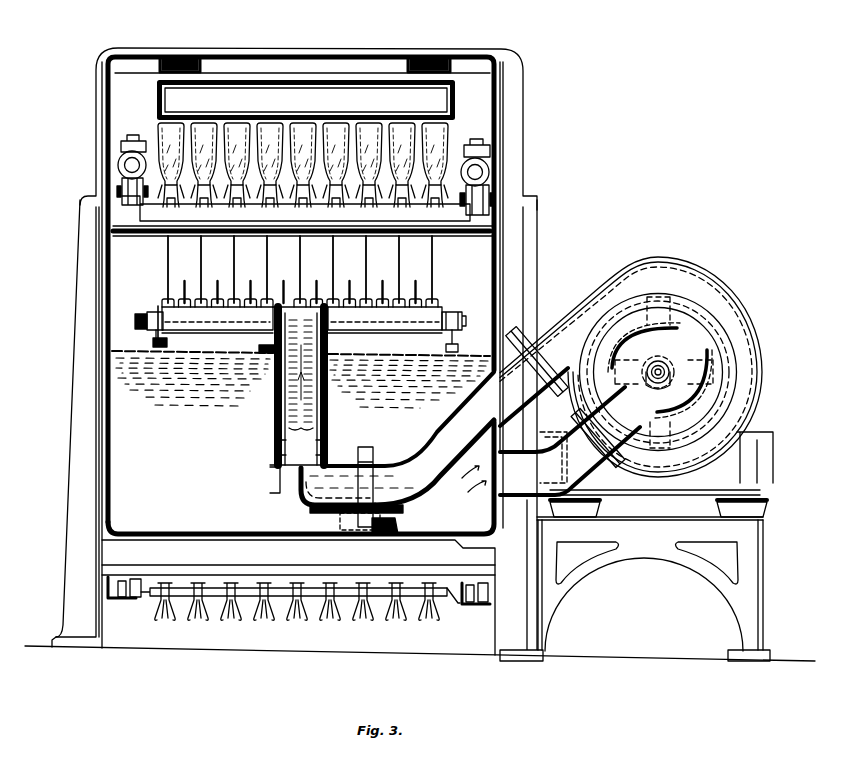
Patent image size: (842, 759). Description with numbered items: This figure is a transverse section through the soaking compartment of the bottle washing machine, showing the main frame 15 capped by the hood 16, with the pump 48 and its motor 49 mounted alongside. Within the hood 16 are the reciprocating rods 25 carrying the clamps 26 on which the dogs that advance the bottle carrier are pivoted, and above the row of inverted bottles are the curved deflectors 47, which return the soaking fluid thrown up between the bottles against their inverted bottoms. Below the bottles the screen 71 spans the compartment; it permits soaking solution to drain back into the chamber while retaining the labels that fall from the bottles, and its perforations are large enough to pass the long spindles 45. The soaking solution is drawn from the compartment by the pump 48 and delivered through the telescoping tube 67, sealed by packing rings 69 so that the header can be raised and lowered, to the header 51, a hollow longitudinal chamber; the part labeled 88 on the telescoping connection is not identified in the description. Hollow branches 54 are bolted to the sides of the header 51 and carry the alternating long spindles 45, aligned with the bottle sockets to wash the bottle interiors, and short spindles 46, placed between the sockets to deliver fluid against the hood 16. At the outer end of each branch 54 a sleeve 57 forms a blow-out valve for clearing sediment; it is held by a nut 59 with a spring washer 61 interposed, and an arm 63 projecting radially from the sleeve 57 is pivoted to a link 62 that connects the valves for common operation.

The main frame 15 is at (84, 274).
The hood 16 is at (298, 48).
The rods 25 is at (118, 165).
The clamps 26 is at (121, 151).
The long spindles 45 is at (432, 268).
The short spindles 46 is at (352, 288).
The curved deflectors 47 is at (386, 96).
The pump 48 is at (592, 280).
The motor 49 is at (712, 305).
The header 51 is at (270, 343).
The hollow branches 54 is at (404, 331).
The sleeve 57 is at (158, 306).
The nuts 59 is at (136, 321).
The spring washers 61 is at (150, 312).
The links 62 is at (168, 343).
The arms 63 is at (154, 338).
The telescoping tube 67 is at (326, 402).
The packing rings 69 is at (276, 364).
The screen 71 is at (292, 235).
The collar 88 is at (326, 414).